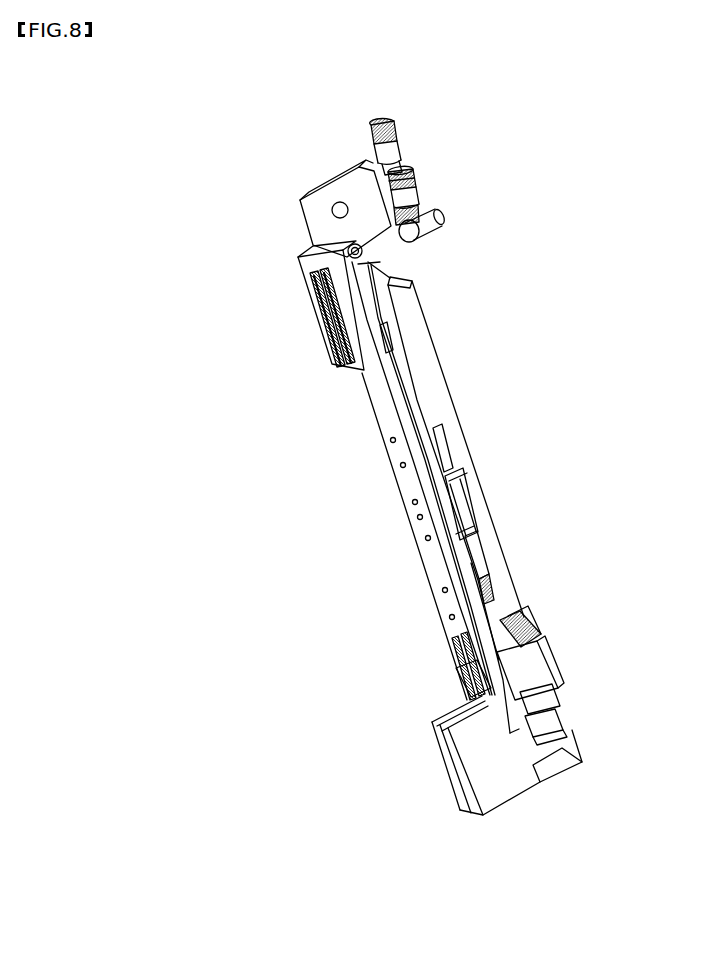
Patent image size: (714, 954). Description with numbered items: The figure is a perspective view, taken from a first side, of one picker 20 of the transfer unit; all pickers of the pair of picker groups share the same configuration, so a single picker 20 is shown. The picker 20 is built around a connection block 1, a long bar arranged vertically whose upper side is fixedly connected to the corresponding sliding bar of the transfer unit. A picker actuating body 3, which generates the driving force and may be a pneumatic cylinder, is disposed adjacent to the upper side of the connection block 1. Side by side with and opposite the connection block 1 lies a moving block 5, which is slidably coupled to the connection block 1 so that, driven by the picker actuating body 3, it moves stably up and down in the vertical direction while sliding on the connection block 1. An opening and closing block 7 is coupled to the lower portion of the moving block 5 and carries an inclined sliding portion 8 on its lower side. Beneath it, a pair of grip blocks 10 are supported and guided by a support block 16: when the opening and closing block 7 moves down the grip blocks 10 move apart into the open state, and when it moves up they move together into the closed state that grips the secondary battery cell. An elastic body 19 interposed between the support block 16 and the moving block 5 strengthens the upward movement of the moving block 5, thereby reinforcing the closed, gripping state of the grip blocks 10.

The picker 20 is at (398, 100).
The connection block 1 is at (380, 417).
The picker actuating body 3 is at (386, 241).
The moving block 5 is at (440, 392).
The opening and closing block 7 is at (528, 700).
The inclined sliding portion 8 is at (535, 724).
The grip blocks 10 is at (432, 722).
The support block 16 is at (530, 661).
The elastic body 19 is at (512, 628).